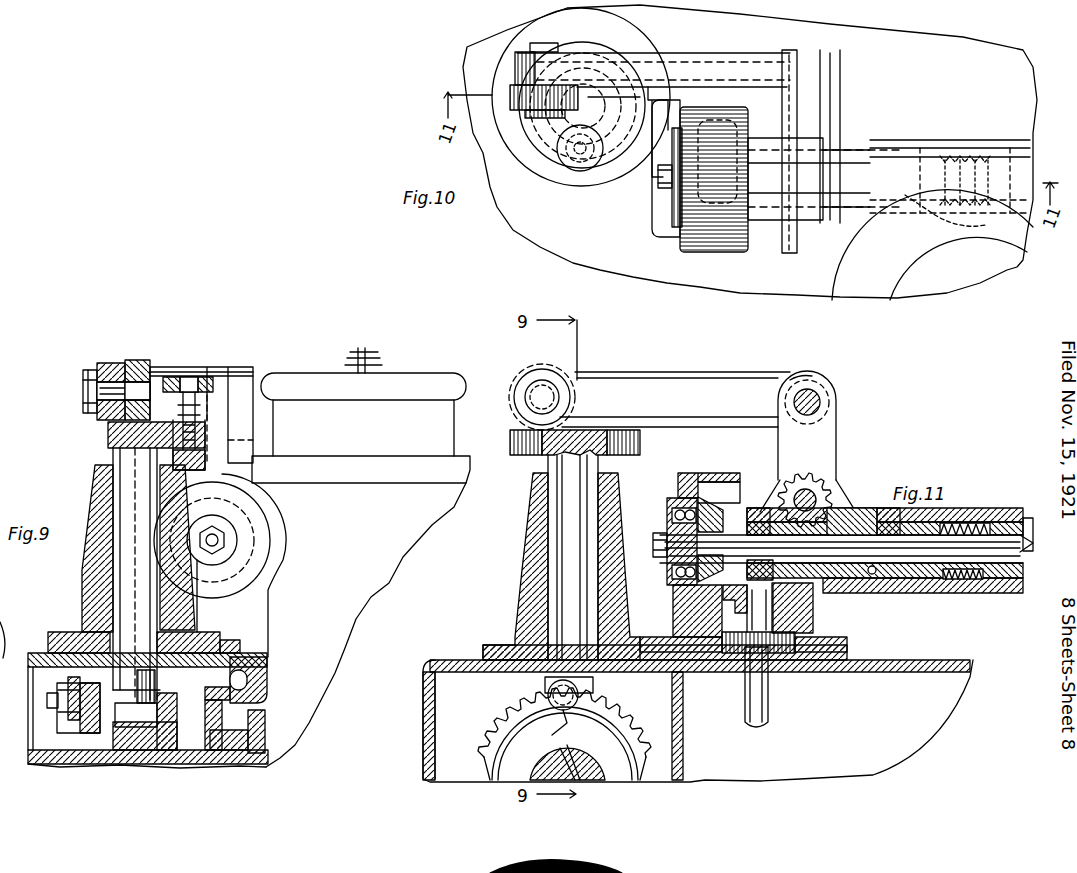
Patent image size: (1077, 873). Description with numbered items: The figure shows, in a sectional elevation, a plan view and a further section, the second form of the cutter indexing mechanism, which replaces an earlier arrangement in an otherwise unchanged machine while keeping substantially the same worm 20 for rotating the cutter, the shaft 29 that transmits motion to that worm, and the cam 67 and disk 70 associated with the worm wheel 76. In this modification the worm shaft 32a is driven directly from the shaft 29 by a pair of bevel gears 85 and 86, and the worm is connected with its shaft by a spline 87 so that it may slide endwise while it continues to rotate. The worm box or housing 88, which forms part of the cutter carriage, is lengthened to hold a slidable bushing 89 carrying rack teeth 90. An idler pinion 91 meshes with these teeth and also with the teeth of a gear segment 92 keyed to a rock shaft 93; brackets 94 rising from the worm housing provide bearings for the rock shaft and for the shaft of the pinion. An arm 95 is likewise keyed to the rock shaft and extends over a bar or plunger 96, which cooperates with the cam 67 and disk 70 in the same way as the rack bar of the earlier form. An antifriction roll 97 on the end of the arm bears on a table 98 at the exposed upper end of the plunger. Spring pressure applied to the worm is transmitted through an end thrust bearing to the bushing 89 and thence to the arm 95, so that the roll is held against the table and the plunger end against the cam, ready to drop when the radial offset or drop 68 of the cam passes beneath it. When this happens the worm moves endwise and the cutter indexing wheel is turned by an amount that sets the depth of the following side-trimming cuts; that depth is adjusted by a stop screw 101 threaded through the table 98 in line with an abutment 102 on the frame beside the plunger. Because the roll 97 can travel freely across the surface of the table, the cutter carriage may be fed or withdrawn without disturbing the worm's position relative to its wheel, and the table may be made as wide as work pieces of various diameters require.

In FIG. 10, the worm 20 is at (1003, 153).
In FIG. 11, the worm 20 is at (968, 582).
In FIG. 11, the shaft 29 is at (768, 708).
In FIG. 11, the worm shaft 32a is at (910, 552).
In FIG. 9, the cam 67 is at (107, 744).
In FIG. 11, the cam 67 is at (577, 718).
In FIG. 11, the radial offset or drop 68 is at (570, 724).
In FIG. 9, the disk 70 is at (147, 713).
In FIG. 11, the disk 70 is at (602, 744).
In FIG. 9, the worm wheel 76 is at (82, 676).
In FIG. 11, the worm wheel 76 is at (503, 719).
In FIG. 11, the bevel gear 85 is at (807, 603).
In FIG. 11, the bevel gear 86 is at (700, 520).
In FIG. 11, the spline 87 is at (1030, 518).
In FIG. 10, the worm box or housing 88 is at (920, 155).
In FIG. 11, the worm box or housing 88 is at (883, 513).
In FIG. 11, the slidable bushing 89 is at (848, 513).
In FIG. 11, the rack teeth 90 is at (817, 520).
In FIG. 11, the idler pinion 91 is at (793, 493).
In FIG. 10, the gear segment 92 is at (783, 182).
In FIG. 9, the gear segment 92 is at (200, 459).
In FIG. 11, the gear segment 92 is at (822, 447).
In FIG. 10, the rock shaft 93 is at (802, 214).
In FIG. 11, the rock shaft 93 is at (818, 400).
In FIG. 10, the brackets 94 is at (850, 158).
In FIG. 11, the brackets 94 is at (838, 425).
In FIG. 10, the arm 95 is at (711, 70).
In FIG. 9, the arm 95 is at (110, 365).
In FIG. 11, the arm 95 is at (672, 390).
In FIG. 11, the bar or plunger 96 is at (566, 542).
In FIG. 9, the antifriction roll 97 is at (137, 357).
In FIG. 11, the antifriction roll 97 is at (525, 372).
In FIG. 10, the table 98 is at (540, 160).
In FIG. 9, the table 98 is at (110, 434).
In FIG. 11, the table 98 is at (510, 442).
In FIG. 10, the stop screw 101 is at (590, 163).
In FIG. 9, the stop screw 101 is at (192, 382).
In FIG. 9, the abutment 102 is at (200, 455).